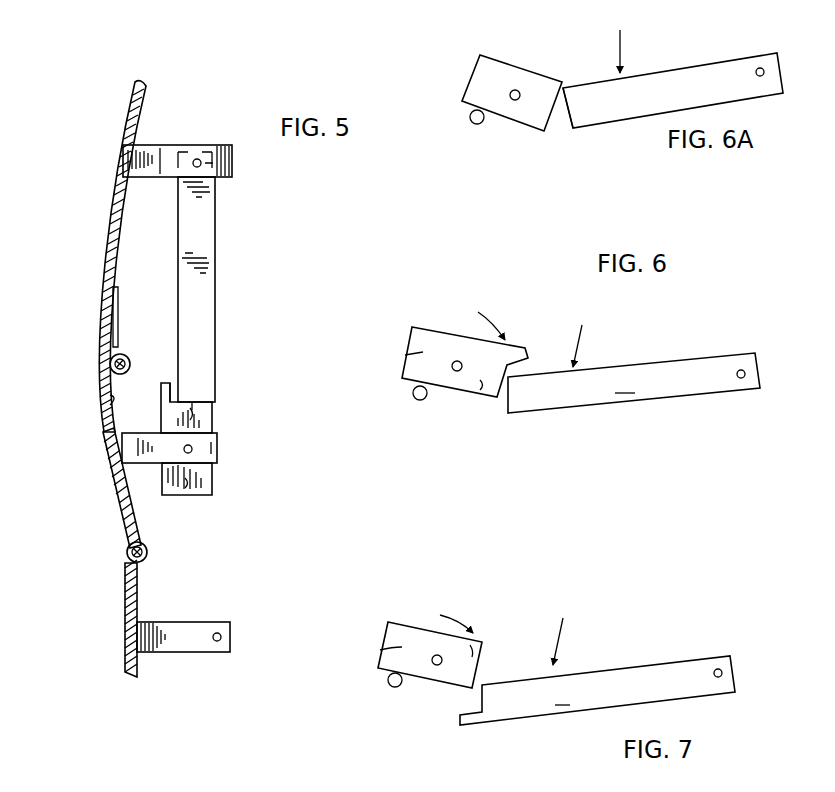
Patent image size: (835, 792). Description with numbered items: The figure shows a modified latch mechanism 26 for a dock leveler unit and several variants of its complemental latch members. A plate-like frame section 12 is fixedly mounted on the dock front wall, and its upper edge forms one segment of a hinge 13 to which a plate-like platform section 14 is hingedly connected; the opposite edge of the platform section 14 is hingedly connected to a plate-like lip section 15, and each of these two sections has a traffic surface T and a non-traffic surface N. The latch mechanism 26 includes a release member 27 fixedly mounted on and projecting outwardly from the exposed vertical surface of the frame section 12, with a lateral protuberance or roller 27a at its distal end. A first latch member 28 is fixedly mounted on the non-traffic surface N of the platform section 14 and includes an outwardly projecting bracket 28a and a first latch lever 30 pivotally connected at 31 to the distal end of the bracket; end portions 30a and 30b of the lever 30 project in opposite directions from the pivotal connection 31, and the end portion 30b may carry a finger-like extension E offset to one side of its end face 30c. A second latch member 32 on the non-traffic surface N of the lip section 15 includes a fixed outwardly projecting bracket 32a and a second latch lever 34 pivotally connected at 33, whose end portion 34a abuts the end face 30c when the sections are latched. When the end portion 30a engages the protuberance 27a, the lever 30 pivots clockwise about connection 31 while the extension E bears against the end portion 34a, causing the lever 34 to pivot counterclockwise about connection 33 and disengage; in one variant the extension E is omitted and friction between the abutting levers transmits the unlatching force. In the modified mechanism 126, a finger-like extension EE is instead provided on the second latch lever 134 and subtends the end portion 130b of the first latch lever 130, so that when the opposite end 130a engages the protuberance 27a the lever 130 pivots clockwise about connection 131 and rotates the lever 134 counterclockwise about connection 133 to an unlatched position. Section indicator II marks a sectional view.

In FIG. 5, the frame section 12 is at (118, 606).
In FIG. 5, the hinge 13 is at (126, 552).
In FIG. 5, the platform section 14 is at (104, 496).
In FIG. 5, the lip section 15 is at (88, 272).
In FIG. 5, the latch mechanism 26 is at (270, 238).
In FIG. 6A, the latch mechanism 26 is at (722, 57).
In FIG. 6, the latch mechanism 26 is at (663, 340).
In FIG. 5, the release member 27 is at (170, 653).
In FIG. 5, the protuberance 27a is at (221, 637).
In FIG. 6A, the protuberance 27a is at (477, 124).
In FIG. 6, the protuberance 27a is at (414, 394).
In FIG. 7, the protuberance 27a is at (398, 680).
In FIG. 5, the first latch member 28 is at (222, 449).
In FIG. 5, the bracket 28a is at (138, 447).
In FIG. 5, the first latch lever 30 is at (216, 423).
In FIG. 6A, the first latch lever 30 is at (555, 42).
In FIG. 6, the first latch lever 30 is at (440, 325).
In FIG. 5, the end portion 30a is at (188, 486).
In FIG. 6, the end portion 30a is at (419, 352).
In FIG. 5, the end portion 30b is at (196, 415).
In FIG. 6, the end portion 30b is at (484, 391).
In FIG. 5, the end face 30c is at (195, 405).
In FIG. 6, the end face 30c is at (515, 378).
In FIG. 5, the pivotal connection 31 is at (190, 454).
In FIG. 6A, the pivotal connection 31 is at (515, 100).
In FIG. 6, the pivotal connection 31 is at (457, 373).
In FIG. 5, the second latch member 32 is at (233, 132).
In FIG. 5, the bracket 32a is at (161, 150).
In FIG. 5, the pivotal connection 33 is at (201, 163).
In FIG. 6A, the pivotal connection 33 is at (764, 72).
In FIG. 6, the pivotal connection 33 is at (740, 378).
In FIG. 5, the second latch lever 34 is at (217, 284).
In FIG. 6A, the second latch lever 34 is at (589, 115).
In FIG. 6, the second latch lever 34 is at (635, 393).
In FIG. 5, the end portion 34a is at (170, 385).
In FIG. 7, the latch mechanism 126 is at (648, 640).
In FIG. 7, the first latch lever 130 is at (386, 626).
In FIG. 7, the end portion 130a is at (382, 655).
In FIG. 7, the end portion 130b is at (472, 650).
In FIG. 7, the pivotal connection 131 is at (437, 655).
In FIG. 7, the pivotal connection 133 is at (723, 673).
In FIG. 7, the second latch lever 134 is at (567, 702).
In FIG. 5, the section line indicator II is at (98, 188).
In FIG. 5, the finger-like extension E is at (168, 392).
In FIG. 6, the finger-like extension E is at (530, 345).
In FIG. 7, the finger-like extension EE is at (462, 725).
In FIG. 5, the non-traffic surface N is at (110, 400).
In FIG. 5, the traffic surface T is at (100, 417).